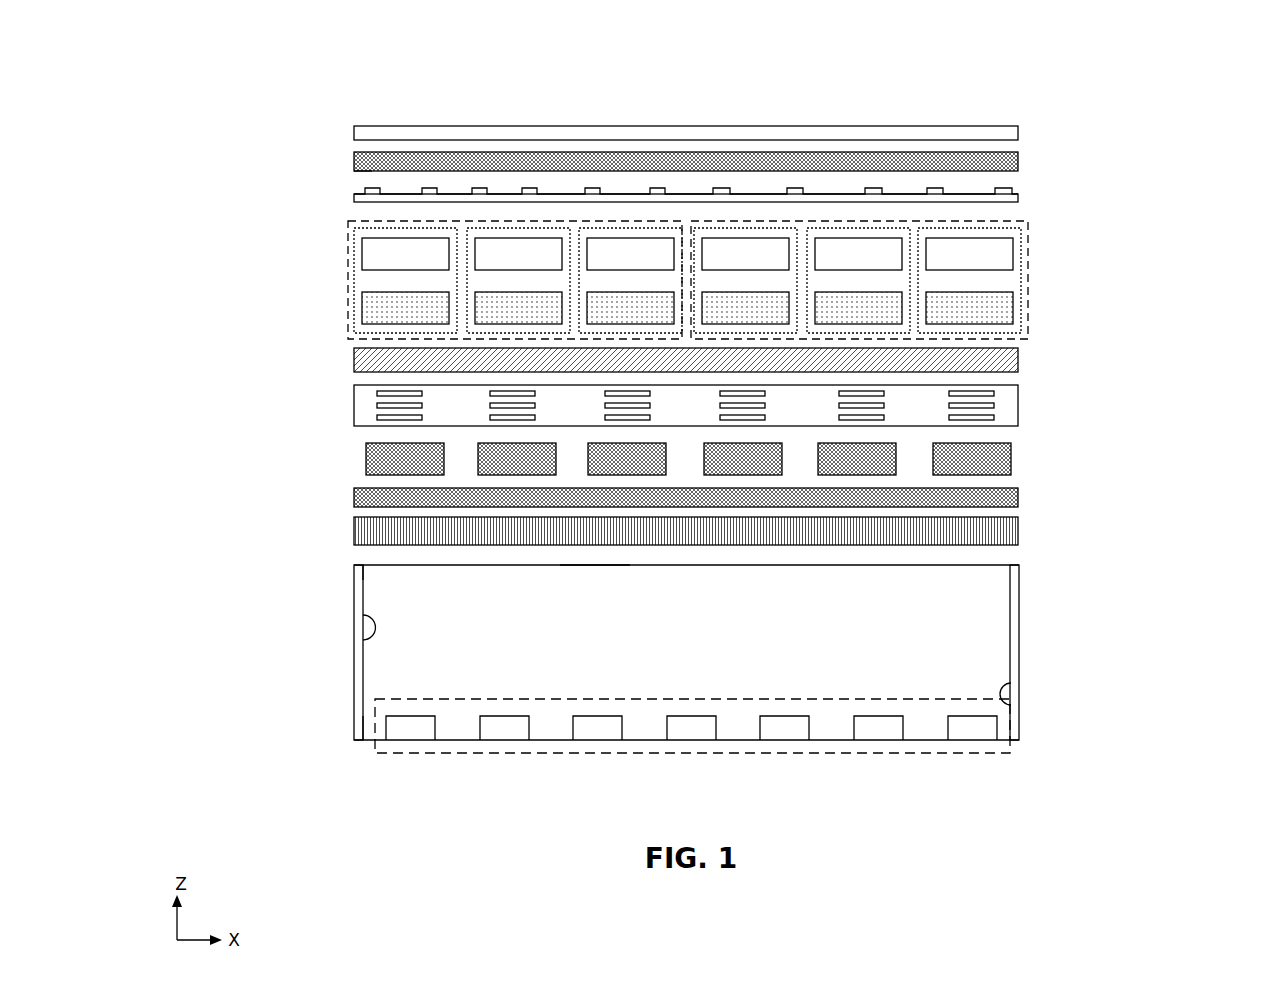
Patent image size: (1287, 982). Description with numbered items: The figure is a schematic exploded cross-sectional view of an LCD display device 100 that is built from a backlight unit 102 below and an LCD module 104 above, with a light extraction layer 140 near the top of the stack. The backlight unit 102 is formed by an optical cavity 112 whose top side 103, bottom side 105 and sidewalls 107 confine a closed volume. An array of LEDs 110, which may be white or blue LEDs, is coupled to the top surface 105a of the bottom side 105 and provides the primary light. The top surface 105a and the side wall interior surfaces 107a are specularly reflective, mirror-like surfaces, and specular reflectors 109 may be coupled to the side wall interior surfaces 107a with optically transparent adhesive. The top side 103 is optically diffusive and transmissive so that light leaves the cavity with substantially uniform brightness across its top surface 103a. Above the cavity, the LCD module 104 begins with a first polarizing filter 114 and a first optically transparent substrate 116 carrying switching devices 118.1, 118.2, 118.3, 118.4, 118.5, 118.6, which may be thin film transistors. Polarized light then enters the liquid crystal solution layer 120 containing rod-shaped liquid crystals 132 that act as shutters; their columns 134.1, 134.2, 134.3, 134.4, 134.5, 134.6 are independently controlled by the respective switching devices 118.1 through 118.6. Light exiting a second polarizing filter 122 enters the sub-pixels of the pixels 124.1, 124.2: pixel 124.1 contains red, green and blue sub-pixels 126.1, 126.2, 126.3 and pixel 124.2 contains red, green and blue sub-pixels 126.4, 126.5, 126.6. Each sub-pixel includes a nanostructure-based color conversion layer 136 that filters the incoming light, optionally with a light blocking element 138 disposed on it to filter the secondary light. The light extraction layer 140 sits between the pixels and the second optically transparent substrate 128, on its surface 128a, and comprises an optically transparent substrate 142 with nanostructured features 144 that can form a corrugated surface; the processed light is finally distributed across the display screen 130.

The LCD display device 100 is at (1152, 112).
The backlight unit 102 is at (1097, 568).
The top side 103 is at (368, 563).
The top surface 103a is at (593, 558).
The LCD module 104 is at (1097, 117).
The bottom side 105 is at (460, 750).
The top surface 105a is at (358, 728).
The sidewalls 107 is at (343, 666).
The side wall interior surfaces 107a is at (357, 640).
The specular reflectors 109 is at (365, 583).
The array of LEDs 110 is at (947, 697).
The optical cavity 112 is at (1024, 606).
The first polarizing filter 114 is at (1005, 528).
The first optically transparent substrate 116 is at (1005, 496).
The switching device 118.1 is at (405, 459).
The switching device 118.2 is at (517, 459).
The switching device 118.3 is at (627, 459).
The switching device 118.4 is at (743, 459).
The switching device 118.5 is at (857, 459).
The switching device 118.6 is at (972, 459).
The liquid crystal solution layer 120 is at (680, 420).
The second polarizing filter 122 is at (1005, 356).
The pixel 124.1 is at (466, 216).
The pixel 124.2 is at (894, 216).
The red sub-pixel 126.1 is at (402, 228).
The green sub-pixel 126.2 is at (517, 228).
The blue sub-pixel 126.3 is at (628, 228).
The red sub-pixel 126.4 is at (745, 228).
The green sub-pixel 126.5 is at (857, 228).
The blue sub-pixel 126.6 is at (968, 228).
The second optically transparent substrate 128 is at (1005, 160).
The surface 128a is at (360, 175).
The display screen 130 is at (1005, 131).
The liquid crystals 132 is at (633, 422).
The column of liquid crystals 134.1 is at (373, 388).
The column of liquid crystals 134.2 is at (486, 388).
The column of liquid crystals 134.3 is at (601, 388).
The column of liquid crystals 134.4 is at (716, 388).
The column of liquid crystals 134.5 is at (835, 388).
The column of liquid crystals 134.6 is at (945, 388).
The NS-based CC layer 136 is at (687, 308).
The light blocking element 138 is at (687, 254).
The light extraction layer 140 is at (665, 196).
The optically transparent substrate 142 is at (358, 203).
The nanostructured features 144 is at (367, 192).